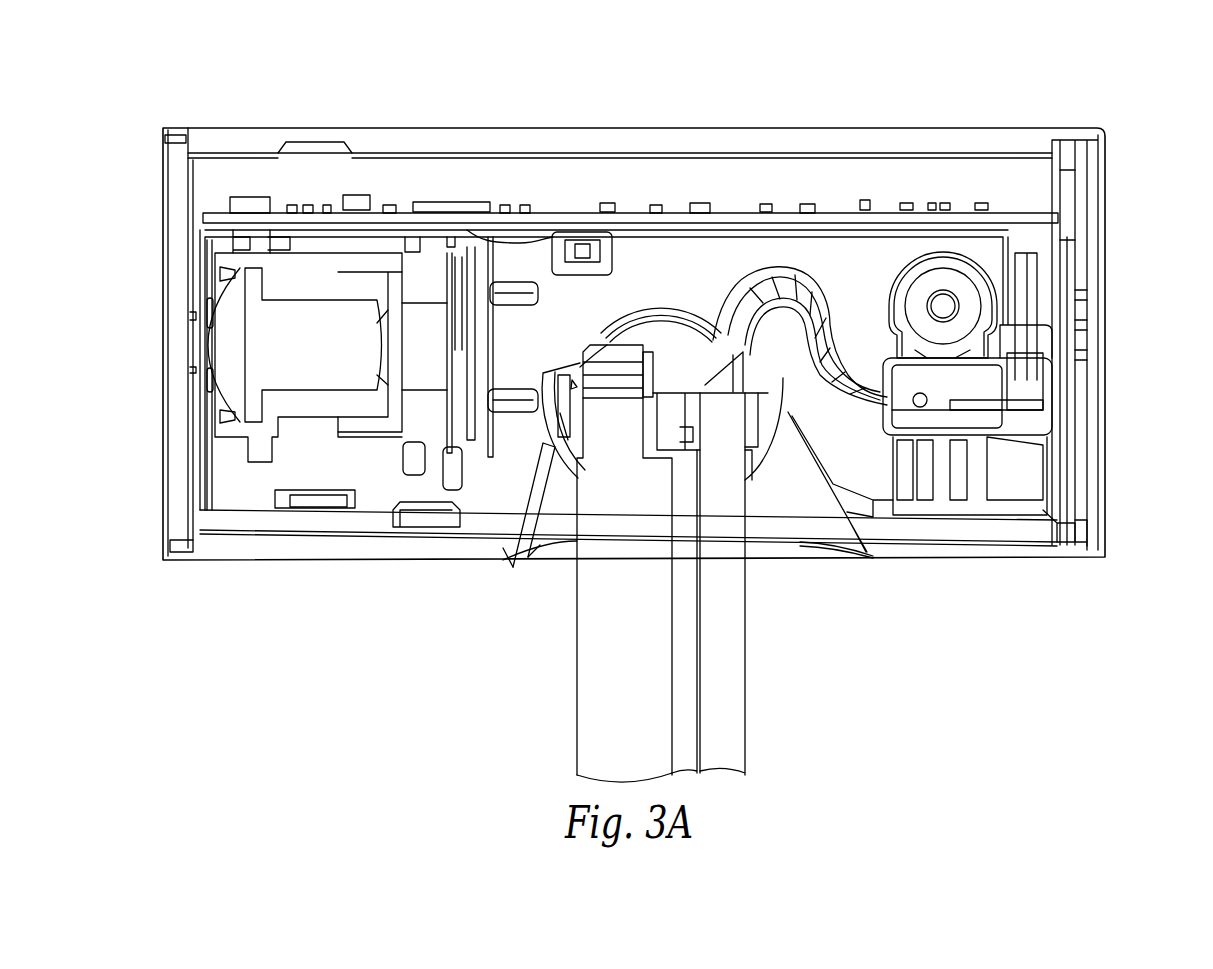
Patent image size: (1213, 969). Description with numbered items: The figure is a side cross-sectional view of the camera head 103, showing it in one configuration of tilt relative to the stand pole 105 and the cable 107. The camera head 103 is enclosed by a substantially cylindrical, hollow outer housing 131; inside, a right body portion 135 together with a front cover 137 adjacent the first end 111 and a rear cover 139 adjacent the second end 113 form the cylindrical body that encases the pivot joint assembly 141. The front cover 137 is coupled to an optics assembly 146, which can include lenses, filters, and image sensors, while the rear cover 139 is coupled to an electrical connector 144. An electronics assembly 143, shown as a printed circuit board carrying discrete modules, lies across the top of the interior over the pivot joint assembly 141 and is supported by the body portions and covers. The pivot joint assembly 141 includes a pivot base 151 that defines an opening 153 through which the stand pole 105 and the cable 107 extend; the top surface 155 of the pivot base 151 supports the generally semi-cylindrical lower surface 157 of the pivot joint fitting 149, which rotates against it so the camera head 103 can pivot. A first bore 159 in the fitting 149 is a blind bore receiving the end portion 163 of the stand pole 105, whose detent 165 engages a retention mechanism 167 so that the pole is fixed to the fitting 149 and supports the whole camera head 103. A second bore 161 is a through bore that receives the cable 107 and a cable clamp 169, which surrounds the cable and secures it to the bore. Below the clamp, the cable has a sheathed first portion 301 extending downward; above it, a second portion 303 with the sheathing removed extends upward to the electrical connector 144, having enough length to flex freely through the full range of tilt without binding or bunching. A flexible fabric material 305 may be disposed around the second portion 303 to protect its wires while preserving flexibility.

The camera head 103 is at (283, 76).
The stand pole 105 is at (577, 693).
The cable 107 is at (753, 678).
The first end 111 is at (157, 360).
The second end 113 is at (1108, 398).
The outer housing 131 is at (425, 125).
The right body portion 135 is at (506, 132).
The front cover 137 is at (157, 471).
The rear cover 139 is at (1108, 258).
The pivot joint assembly 141 is at (710, 303).
The electronics assembly 143 is at (962, 217).
The electrical connector 144 is at (880, 430).
The optics assembly 146 is at (168, 132).
The pivot joint fitting 149 is at (757, 468).
The pivot base 151 is at (516, 567).
The opening 153 is at (563, 552).
The top surface 155 is at (552, 450).
The lower surface 157 is at (552, 447).
The first bore 159 is at (637, 345).
The second bore 161 is at (700, 392).
The end portion 163 is at (548, 385).
The detent 165 is at (612, 377).
The retention mechanism 167 is at (568, 365).
The cable clamp 169 is at (752, 420).
The first portion 301 is at (733, 583).
The second portion 303 is at (783, 283).
The flexible fabric material 305 is at (833, 308).